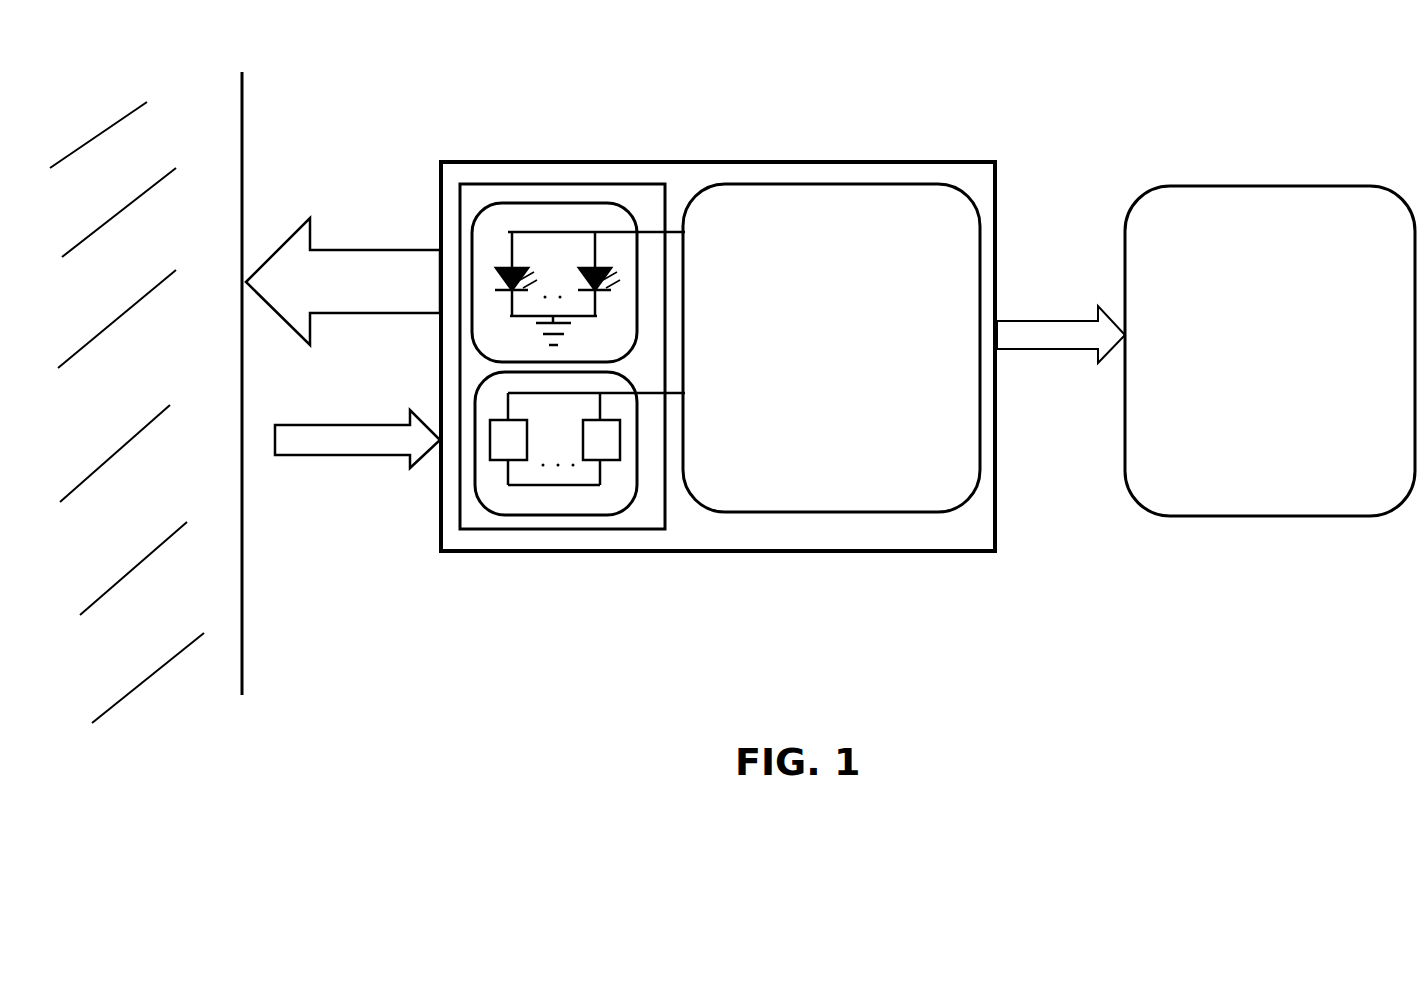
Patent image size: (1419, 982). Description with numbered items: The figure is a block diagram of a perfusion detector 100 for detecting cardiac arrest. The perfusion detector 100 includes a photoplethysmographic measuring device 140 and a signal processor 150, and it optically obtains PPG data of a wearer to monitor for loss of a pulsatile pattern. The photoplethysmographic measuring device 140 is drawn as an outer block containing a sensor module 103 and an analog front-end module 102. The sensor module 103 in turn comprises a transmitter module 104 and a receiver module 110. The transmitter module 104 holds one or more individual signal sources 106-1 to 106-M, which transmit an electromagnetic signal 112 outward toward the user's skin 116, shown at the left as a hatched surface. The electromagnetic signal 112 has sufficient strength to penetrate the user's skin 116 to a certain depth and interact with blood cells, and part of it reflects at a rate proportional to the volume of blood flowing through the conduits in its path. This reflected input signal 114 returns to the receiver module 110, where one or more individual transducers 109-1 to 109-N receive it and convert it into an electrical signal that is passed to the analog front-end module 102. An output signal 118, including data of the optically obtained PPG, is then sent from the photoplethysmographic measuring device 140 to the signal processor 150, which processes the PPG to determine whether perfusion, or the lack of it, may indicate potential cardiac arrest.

The perfusion detector 100 is at (991, 88).
The analog front-end module 102 is at (888, 247).
The sensor module 103 is at (566, 180).
The transmitter module 104 is at (494, 197).
The individual signal source 106-1 is at (501, 254).
The individual signal source 106-M is at (632, 271).
The individual transducer 109-1 is at (496, 452).
The individual transducer 109-N is at (607, 458).
The receiver module 110 is at (557, 517).
The electromagnetic signal 112 is at (346, 268).
The reflected input signal 114 is at (412, 447).
The user's skin 116 is at (183, 215).
The output signal 118 is at (1030, 311).
The photoplethysmographic measuring device 140 is at (901, 560).
The signal processor 150 is at (1338, 482).